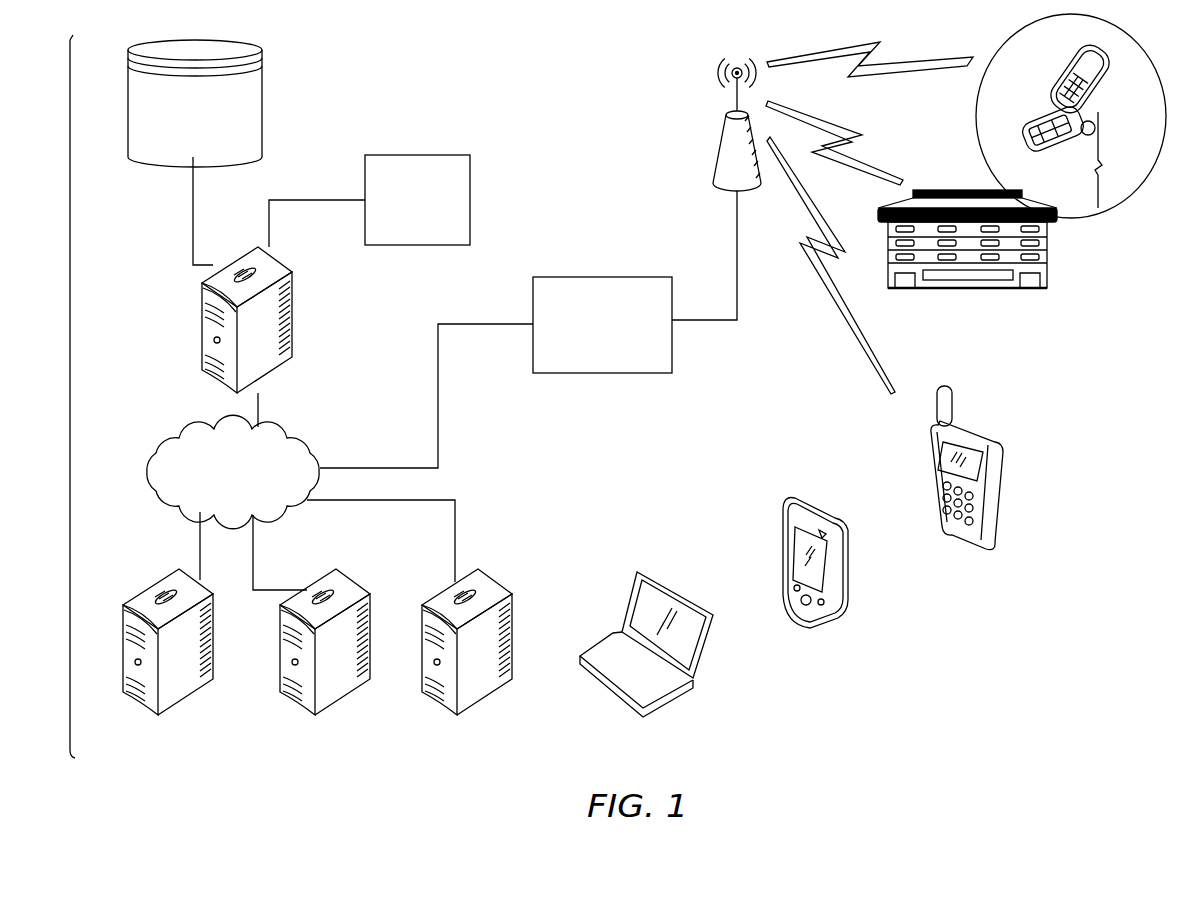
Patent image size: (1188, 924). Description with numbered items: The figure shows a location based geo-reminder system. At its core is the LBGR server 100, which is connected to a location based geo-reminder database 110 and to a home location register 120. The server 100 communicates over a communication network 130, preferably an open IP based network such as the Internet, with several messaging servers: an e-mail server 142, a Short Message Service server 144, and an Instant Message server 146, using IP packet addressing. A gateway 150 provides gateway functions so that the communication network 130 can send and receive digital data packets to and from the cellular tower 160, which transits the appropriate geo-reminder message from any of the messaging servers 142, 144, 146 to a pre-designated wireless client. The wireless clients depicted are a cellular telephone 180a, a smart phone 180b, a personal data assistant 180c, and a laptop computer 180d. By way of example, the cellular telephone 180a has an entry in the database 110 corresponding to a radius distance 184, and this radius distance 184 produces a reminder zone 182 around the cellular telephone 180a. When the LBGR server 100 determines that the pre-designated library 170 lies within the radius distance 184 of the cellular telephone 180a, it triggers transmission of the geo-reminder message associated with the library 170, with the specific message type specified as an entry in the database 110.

The LBGR server 100 is at (295, 310).
The location based geo-reminder database 110 is at (262, 93).
The home location register 120 is at (452, 155).
The communication network 130 is at (233, 472).
The e-mail server 142 is at (158, 663).
The Short Message Service (SMS) server 144 is at (317, 663).
The Instant Message (IM) server 146 is at (465, 663).
The gateway 150 is at (650, 277).
The cellular tower 160 is at (718, 142).
The library 170 is at (1033, 286).
The cellular telephone 180a is at (1027, 134).
The smart phone 180b is at (940, 477).
The personal data assistant 180c is at (783, 563).
The laptop computer 180d is at (630, 610).
The reminder zone 182 is at (1111, 216).
The radius distance 184 is at (1116, 160).